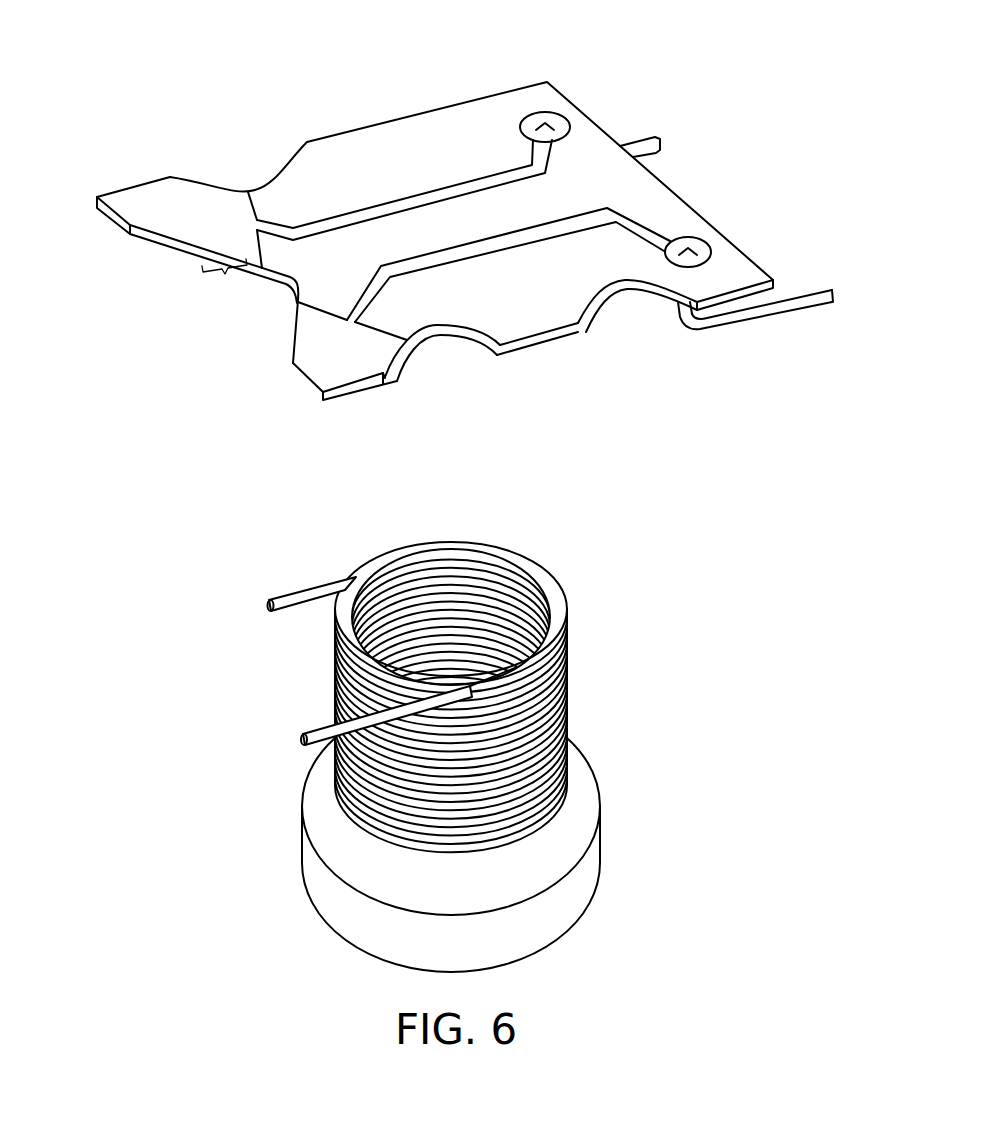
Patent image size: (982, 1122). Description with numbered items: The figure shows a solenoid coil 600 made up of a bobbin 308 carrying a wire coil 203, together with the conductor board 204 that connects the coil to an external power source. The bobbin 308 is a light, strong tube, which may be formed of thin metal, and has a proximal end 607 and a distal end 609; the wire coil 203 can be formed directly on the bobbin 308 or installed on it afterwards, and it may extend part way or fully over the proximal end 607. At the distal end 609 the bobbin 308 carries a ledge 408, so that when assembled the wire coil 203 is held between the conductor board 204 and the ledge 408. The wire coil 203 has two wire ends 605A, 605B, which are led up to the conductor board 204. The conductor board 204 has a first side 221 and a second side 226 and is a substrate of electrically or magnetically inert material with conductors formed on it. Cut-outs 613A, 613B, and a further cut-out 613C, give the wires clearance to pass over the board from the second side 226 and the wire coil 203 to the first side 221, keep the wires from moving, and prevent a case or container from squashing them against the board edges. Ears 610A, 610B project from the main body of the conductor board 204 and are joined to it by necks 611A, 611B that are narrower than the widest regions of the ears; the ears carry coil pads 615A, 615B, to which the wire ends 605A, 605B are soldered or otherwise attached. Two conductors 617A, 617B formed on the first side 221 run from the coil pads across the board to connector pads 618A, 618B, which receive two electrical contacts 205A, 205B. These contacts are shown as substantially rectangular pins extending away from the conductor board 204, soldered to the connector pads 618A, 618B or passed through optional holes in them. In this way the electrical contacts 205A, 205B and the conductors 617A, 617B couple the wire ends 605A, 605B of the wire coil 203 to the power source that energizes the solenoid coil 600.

The conductor board 204 is at (536, 76).
The ear 610A is at (214, 113).
The ear 610B is at (469, 414).
The cut-out 613A is at (300, 141).
The cut-out 613B is at (494, 366).
The third contact portion 613C is at (673, 317).
The coil pad 615A is at (143, 212).
The coil pad 615B is at (315, 362).
The neck 611A is at (215, 283).
The neck 611B is at (500, 366).
The first side 221 is at (307, 277).
The second side 226 is at (297, 293).
The conductor 617A is at (455, 183).
The conductor 617B is at (640, 218).
The connector pad 618A is at (565, 116).
The connector pad 618B is at (712, 243).
The electrical contact 205A is at (660, 136).
The electrical contact 205B is at (807, 290).
The bobbin 308 is at (560, 583).
The proximal end 607 is at (606, 620).
The wire coil 203 is at (567, 742).
The distal end 609 is at (627, 782).
The ledge 408 is at (600, 883).
The wire end 605A is at (268, 602).
The wire end 605B is at (300, 740).
The solenoid coil 600 is at (250, 924).